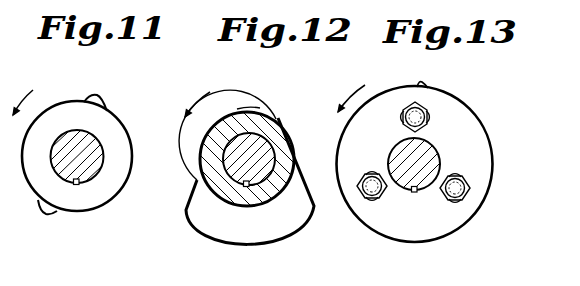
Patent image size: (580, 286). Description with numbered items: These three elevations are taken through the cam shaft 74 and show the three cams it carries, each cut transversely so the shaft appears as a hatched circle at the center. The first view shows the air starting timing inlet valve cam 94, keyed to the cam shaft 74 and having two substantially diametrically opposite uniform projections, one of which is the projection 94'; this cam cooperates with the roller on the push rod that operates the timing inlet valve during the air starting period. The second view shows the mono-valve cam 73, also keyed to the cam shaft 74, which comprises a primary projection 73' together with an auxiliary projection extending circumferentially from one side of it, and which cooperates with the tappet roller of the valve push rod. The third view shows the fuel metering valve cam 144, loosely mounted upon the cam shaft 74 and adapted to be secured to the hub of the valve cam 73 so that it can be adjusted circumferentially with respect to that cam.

In FIG. 11, the cam 94 is at (92, 156).
In FIG. 11, the uniform projection 94' is at (117, 91).
In FIG. 11, the cam shaft 74 is at (58, 175).
In FIG. 12, the cam shaft 74 is at (233, 166).
In FIG. 13, the cam shaft 74 is at (412, 188).
In FIG. 12, the cam 73 is at (261, 156).
In FIG. 12, the primary projection 73' is at (246, 182).
In FIG. 13, the cam 144 is at (470, 141).